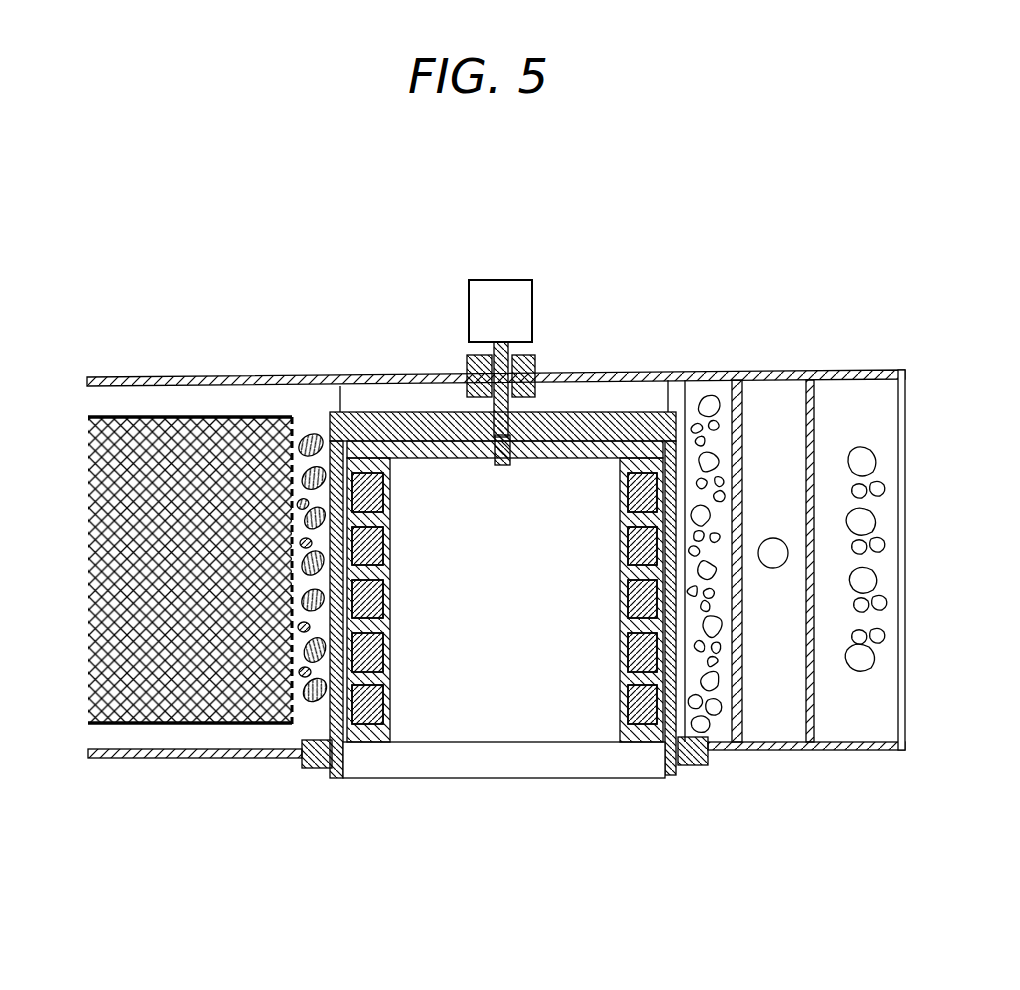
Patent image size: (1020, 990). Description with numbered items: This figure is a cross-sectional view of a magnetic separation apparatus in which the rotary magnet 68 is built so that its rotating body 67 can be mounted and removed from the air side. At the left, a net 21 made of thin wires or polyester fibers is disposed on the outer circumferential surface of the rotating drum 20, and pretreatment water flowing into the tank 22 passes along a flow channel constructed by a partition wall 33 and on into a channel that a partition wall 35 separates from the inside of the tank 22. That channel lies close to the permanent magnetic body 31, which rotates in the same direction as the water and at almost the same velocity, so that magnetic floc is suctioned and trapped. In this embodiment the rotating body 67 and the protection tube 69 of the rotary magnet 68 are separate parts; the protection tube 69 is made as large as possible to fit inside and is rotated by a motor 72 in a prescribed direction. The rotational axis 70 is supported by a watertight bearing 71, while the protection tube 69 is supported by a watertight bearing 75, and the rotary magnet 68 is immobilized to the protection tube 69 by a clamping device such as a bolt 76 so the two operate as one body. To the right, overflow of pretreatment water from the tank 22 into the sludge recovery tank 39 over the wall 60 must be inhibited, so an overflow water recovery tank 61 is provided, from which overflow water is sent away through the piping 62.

The rotating drum 20 is at (167, 417).
The net 21 is at (102, 553).
The tank 22 is at (272, 378).
The permanent magnetic body 31 is at (652, 400).
The partition wall 33 is at (683, 395).
The partition wall 35 is at (617, 390).
The sludge recovery tank 39 is at (866, 717).
The wall 60 is at (740, 432).
The overflow water recovery tank 61 is at (803, 747).
The piping 62 is at (783, 566).
The rotating body 67 is at (628, 485).
The rotary magnet 68 is at (443, 458).
The protection tube 69 is at (345, 760).
The rotational axis 70 is at (535, 368).
The watertight bearing 71 is at (470, 368).
The motor 72 is at (513, 280).
The watertight bearing 75 is at (703, 767).
The bolt 76 is at (503, 465).